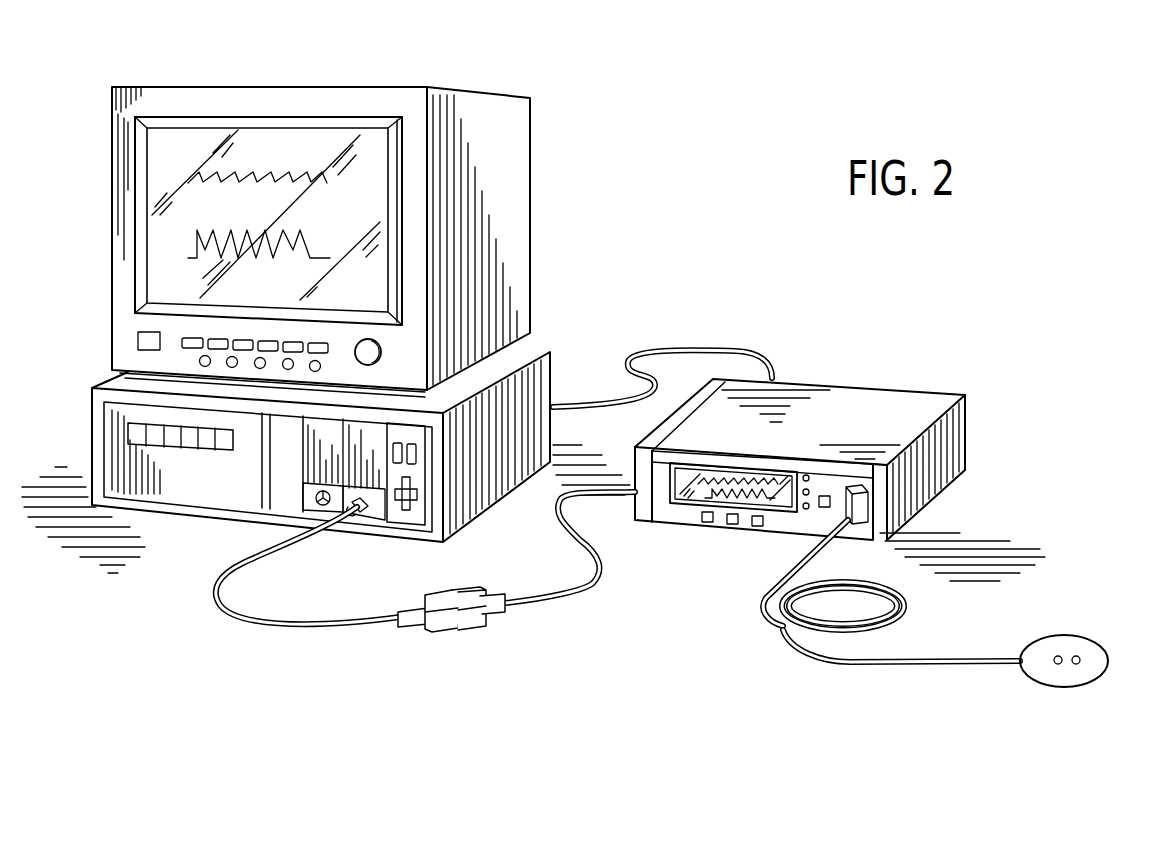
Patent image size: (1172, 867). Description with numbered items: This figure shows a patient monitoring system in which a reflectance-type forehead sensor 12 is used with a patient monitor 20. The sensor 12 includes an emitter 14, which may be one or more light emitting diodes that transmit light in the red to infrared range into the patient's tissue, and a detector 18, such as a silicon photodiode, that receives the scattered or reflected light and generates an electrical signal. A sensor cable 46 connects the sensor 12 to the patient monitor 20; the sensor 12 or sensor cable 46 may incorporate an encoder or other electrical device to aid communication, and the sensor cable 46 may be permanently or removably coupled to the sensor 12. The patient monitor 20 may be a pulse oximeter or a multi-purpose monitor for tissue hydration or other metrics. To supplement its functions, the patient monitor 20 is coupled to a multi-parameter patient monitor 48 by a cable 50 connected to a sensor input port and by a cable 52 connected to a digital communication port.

The sensor 12 is at (1108, 625).
The emitter 14 is at (1058, 667).
The detector 18 is at (1077, 667).
The patient monitor 20 is at (881, 392).
The sensor cable 46 is at (764, 604).
The multi-parameter patient monitor 48 is at (382, 86).
The cable 50 is at (598, 588).
The cable 52 is at (672, 350).